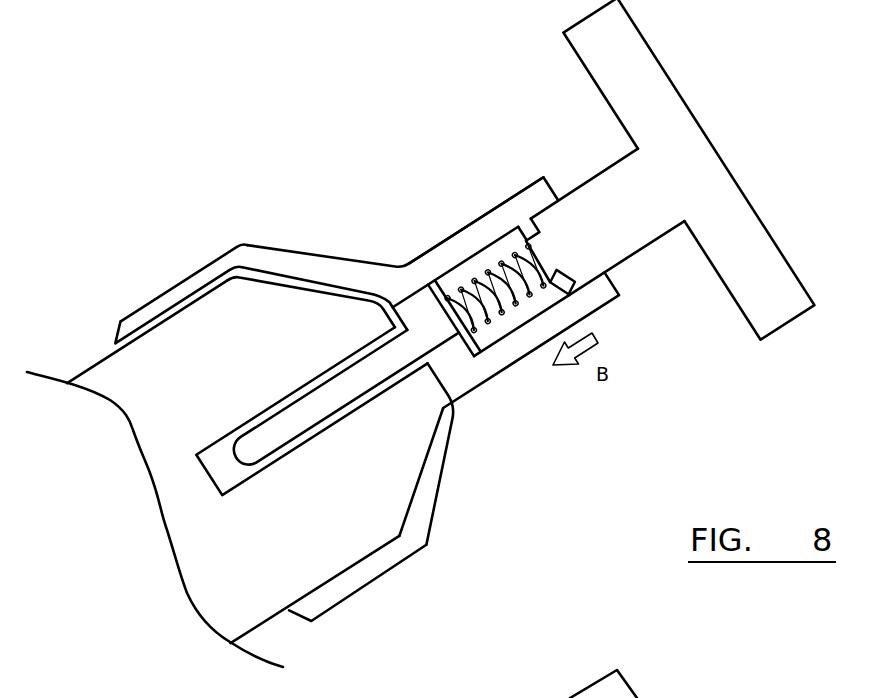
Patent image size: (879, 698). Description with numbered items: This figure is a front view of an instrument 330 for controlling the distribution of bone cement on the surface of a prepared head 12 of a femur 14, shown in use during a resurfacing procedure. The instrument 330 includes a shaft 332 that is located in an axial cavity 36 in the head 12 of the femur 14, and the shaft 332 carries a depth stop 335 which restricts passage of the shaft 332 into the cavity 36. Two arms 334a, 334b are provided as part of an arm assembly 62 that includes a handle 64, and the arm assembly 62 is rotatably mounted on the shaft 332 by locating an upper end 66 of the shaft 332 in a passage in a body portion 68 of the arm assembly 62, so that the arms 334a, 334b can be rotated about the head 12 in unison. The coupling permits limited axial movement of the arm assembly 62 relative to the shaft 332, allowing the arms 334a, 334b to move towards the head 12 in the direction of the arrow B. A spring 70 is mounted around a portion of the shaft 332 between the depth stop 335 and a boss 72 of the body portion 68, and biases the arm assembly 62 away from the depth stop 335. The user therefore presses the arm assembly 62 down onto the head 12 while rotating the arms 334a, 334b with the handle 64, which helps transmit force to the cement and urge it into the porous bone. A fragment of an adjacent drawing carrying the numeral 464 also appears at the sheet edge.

The head 12 is at (281, 327).
The femur 14 is at (253, 540).
The cavity 36 is at (325, 430).
The arm assembly 62 is at (530, 170).
The handle 64 is at (641, 88).
The upper end 66 is at (507, 233).
The body portion 68 is at (623, 210).
The spring 70 is at (490, 275).
The boss 72 is at (572, 290).
The instrument 330 is at (398, 118).
The shaft 332 is at (357, 380).
The arm 334a is at (170, 277).
The arm 334b is at (388, 583).
The depth stop 335 is at (440, 348).
The reference numeral of adjacent figure 464 is at (681, 684).